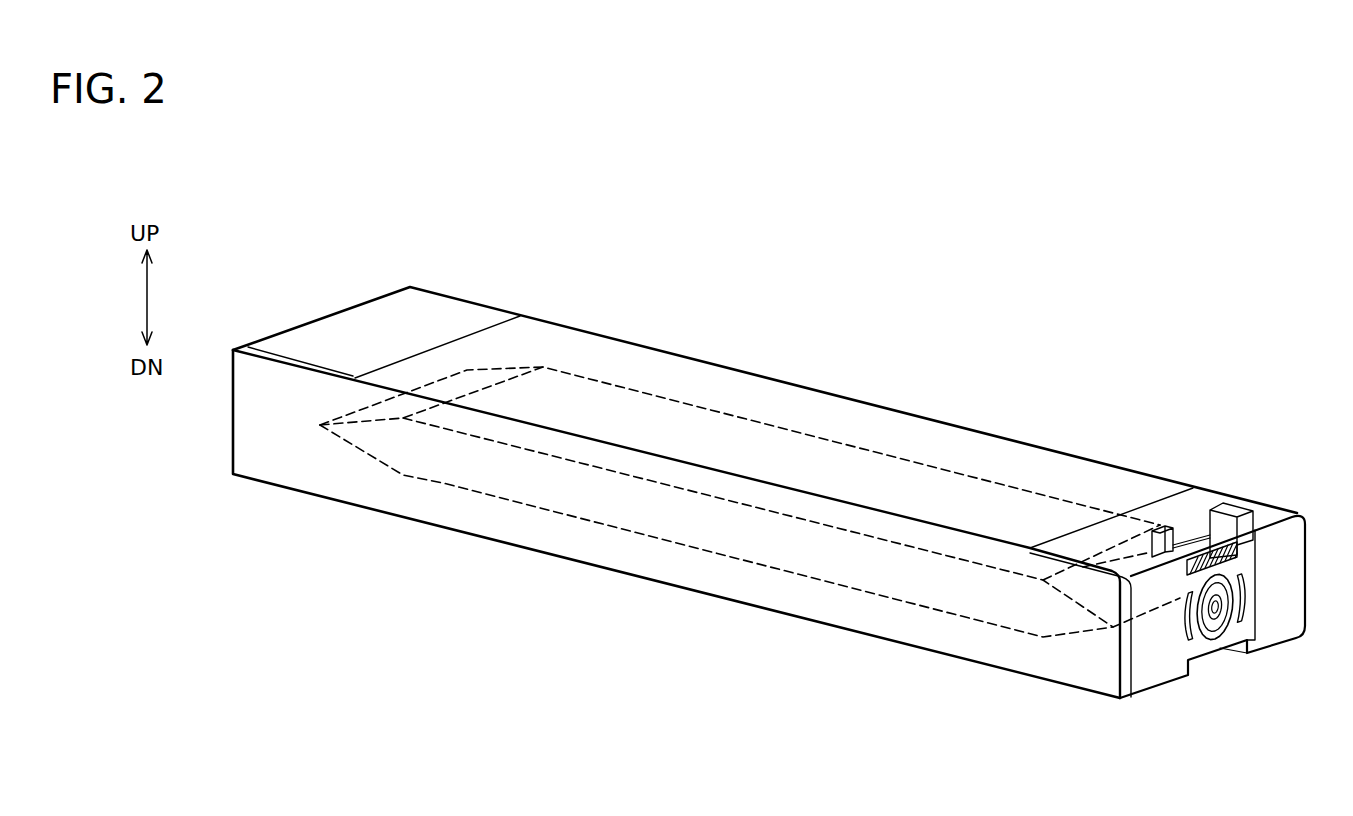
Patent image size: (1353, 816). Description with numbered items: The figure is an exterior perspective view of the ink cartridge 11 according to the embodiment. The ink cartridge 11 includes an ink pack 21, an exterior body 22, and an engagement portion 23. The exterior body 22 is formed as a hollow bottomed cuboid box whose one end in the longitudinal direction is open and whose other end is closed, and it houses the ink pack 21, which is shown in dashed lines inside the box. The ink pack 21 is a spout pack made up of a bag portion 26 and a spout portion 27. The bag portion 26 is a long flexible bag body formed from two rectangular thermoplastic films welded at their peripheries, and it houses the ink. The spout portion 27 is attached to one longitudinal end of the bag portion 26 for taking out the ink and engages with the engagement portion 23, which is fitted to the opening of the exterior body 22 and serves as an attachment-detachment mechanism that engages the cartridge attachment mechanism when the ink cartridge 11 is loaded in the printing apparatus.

The ink cartridge 11 is at (792, 511).
The ink pack 21 is at (1249, 640).
The exterior body 22 is at (873, 638).
The engagement portion 23 is at (1155, 670).
The bag portion 26 is at (724, 412).
The spout portion 27 is at (1226, 603).